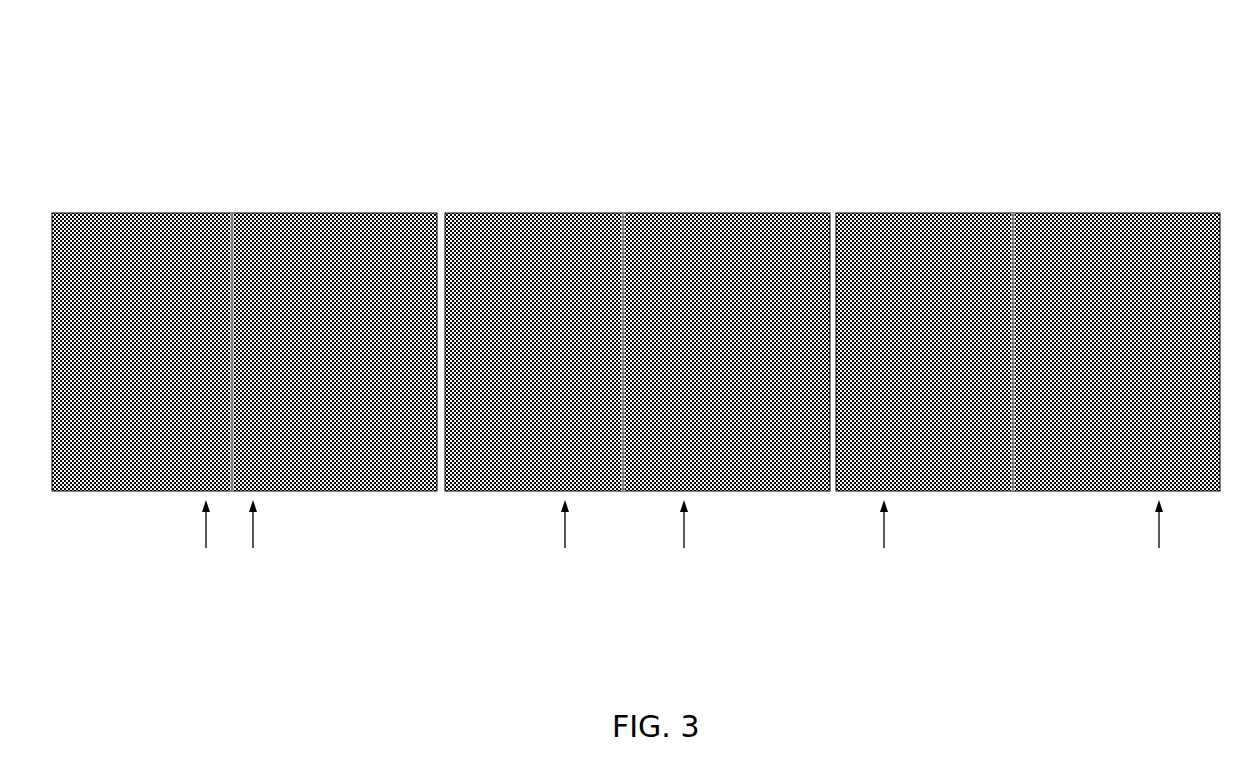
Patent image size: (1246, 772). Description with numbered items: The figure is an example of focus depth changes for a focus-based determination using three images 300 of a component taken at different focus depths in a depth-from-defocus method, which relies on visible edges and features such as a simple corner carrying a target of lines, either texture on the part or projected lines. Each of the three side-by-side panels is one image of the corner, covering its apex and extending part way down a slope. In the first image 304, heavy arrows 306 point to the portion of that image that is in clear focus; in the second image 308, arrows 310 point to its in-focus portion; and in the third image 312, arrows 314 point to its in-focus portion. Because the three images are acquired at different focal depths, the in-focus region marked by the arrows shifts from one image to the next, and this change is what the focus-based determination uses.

The images 300 is at (1088, 52).
The first image 304 is at (156, 194).
The arrows 306 is at (206, 535).
The second image 308 is at (555, 197).
The arrows 310 is at (684, 530).
The third image 312 is at (901, 197).
The arrows 314 is at (1159, 533).